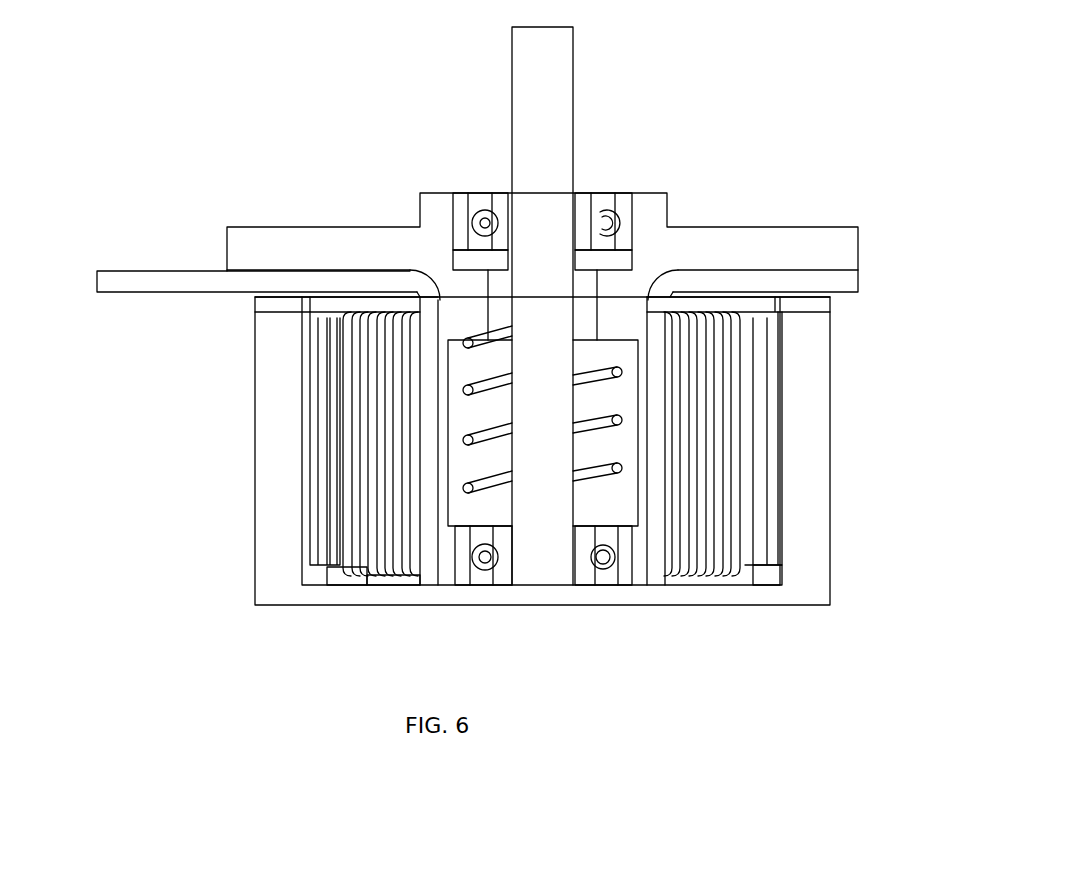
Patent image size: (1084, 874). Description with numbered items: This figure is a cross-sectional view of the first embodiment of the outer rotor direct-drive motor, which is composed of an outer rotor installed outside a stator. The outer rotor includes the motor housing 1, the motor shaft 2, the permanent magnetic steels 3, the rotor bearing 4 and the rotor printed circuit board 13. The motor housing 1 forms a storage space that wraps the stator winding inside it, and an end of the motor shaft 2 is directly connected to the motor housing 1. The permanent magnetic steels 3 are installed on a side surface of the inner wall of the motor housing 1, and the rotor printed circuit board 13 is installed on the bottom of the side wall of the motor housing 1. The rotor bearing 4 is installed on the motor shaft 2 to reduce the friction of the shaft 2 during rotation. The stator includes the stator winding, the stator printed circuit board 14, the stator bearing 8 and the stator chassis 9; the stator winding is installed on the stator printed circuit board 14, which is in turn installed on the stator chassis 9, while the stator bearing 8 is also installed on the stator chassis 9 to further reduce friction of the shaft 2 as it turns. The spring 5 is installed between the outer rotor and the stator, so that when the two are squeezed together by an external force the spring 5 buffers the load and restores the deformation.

The motor housing 1 is at (272, 530).
The motor shaft 2 is at (555, 67).
The permanent magnetic steels 3 is at (782, 568).
The rotor bearing 4 is at (605, 562).
The spring 5 is at (468, 343).
The stator bearing 8 is at (600, 218).
The stator chassis 9 is at (848, 240).
The rotor printed circuit board 13 is at (265, 305).
The stator printed circuit board 14 is at (172, 283).